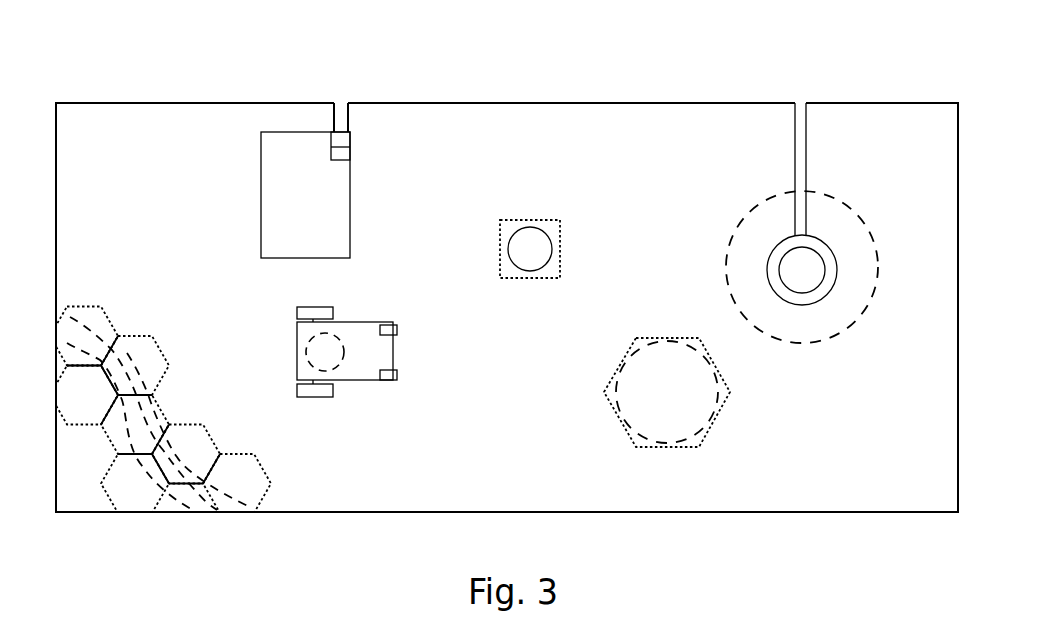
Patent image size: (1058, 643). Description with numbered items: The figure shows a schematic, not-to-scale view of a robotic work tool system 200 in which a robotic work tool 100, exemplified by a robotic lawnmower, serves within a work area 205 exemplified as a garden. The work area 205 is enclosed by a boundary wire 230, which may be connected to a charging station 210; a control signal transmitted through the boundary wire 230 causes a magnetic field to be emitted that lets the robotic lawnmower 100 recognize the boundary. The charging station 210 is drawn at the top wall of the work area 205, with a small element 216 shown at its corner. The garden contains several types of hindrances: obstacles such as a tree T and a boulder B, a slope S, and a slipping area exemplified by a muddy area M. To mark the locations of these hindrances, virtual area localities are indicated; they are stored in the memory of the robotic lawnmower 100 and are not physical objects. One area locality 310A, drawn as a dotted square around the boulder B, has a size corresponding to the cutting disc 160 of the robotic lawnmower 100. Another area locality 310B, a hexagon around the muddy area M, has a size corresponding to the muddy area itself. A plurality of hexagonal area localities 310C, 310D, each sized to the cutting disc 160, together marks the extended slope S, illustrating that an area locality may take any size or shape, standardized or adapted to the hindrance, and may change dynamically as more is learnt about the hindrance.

The robotic work tool system 200 is at (228, 89).
The work area 205 is at (163, 133).
The charging station 210 is at (260, 173).
The charging contact 216 is at (343, 140).
The boundary wire 230 is at (872, 103).
The area locality 310A is at (502, 222).
The area locality 310B is at (667, 337).
The area locality 310C is at (93, 307).
The area locality 310D is at (133, 335).
The robotic work tool 100 is at (298, 352).
The cutting disc 160 is at (304, 358).